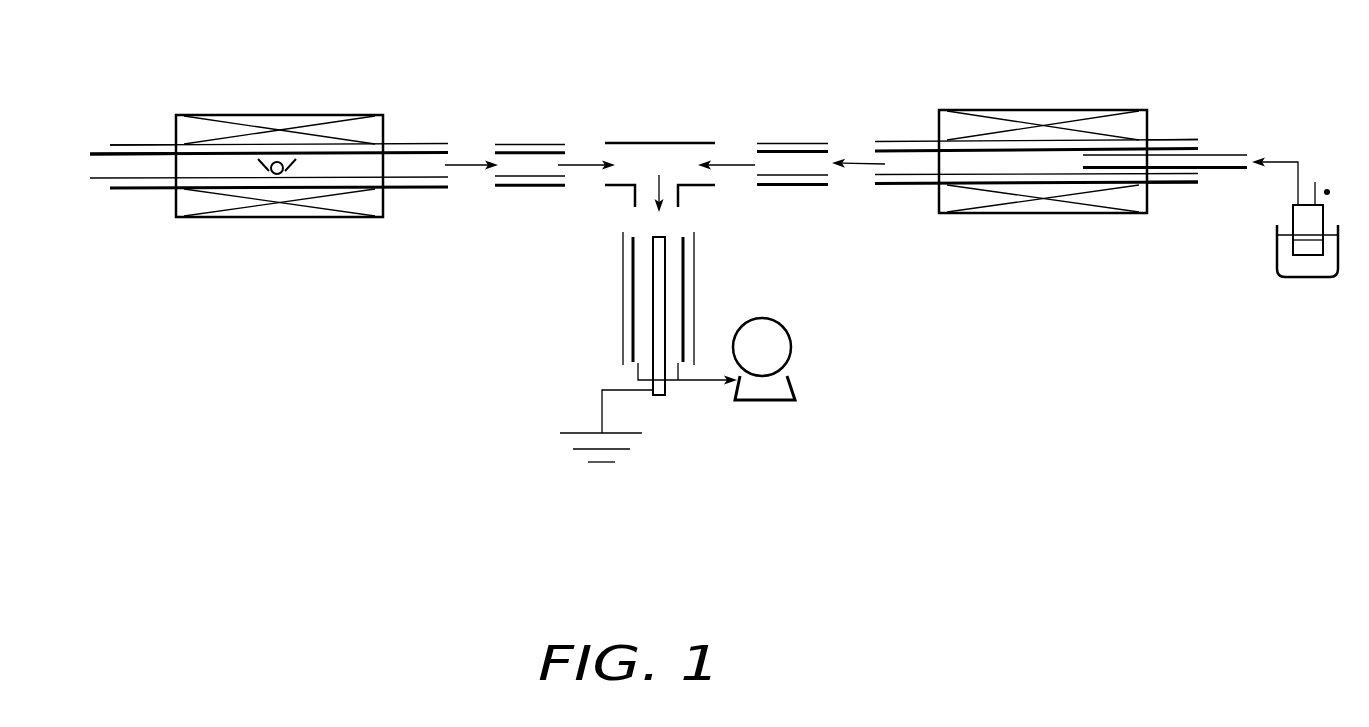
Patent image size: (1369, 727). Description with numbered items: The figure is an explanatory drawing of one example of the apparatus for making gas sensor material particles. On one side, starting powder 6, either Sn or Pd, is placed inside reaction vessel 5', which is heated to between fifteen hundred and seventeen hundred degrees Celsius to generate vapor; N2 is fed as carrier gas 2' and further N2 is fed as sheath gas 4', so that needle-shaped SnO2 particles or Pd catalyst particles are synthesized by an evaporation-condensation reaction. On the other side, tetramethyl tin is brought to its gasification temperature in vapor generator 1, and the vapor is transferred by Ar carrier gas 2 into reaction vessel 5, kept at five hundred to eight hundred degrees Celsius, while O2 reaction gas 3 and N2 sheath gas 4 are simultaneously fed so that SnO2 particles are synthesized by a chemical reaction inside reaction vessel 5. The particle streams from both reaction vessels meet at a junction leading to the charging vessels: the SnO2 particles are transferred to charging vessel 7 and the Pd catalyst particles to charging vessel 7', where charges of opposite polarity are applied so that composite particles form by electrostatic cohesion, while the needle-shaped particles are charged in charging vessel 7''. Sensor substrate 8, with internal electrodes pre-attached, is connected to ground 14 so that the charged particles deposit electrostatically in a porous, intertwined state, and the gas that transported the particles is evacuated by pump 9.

The vapor generator 1 is at (1288, 303).
The carrier gas 2 is at (1302, 347).
The carrier gas 2' is at (106, 169).
The reaction gas 3 is at (1240, 186).
The sheath gas 4 is at (1207, 131).
The sheath gas 4' is at (106, 129).
The reaction vessel 5 is at (1043, 109).
The reaction vessel 5' is at (279, 118).
The starting powder 6 is at (269, 137).
The charging vessel 7 is at (784, 119).
The charging vessel 7' is at (540, 119).
The charging vessel 7'' is at (606, 326).
The sensor substrate 8 is at (674, 276).
The pump 9 is at (778, 347).
The ground 14 is at (602, 493).